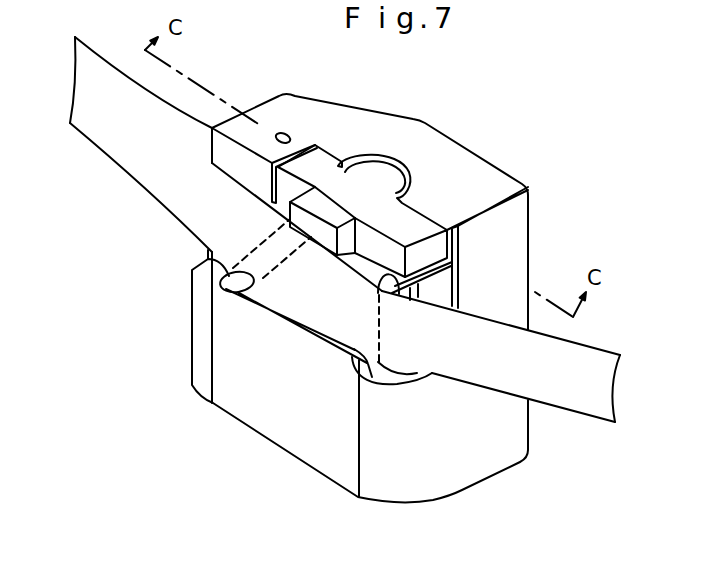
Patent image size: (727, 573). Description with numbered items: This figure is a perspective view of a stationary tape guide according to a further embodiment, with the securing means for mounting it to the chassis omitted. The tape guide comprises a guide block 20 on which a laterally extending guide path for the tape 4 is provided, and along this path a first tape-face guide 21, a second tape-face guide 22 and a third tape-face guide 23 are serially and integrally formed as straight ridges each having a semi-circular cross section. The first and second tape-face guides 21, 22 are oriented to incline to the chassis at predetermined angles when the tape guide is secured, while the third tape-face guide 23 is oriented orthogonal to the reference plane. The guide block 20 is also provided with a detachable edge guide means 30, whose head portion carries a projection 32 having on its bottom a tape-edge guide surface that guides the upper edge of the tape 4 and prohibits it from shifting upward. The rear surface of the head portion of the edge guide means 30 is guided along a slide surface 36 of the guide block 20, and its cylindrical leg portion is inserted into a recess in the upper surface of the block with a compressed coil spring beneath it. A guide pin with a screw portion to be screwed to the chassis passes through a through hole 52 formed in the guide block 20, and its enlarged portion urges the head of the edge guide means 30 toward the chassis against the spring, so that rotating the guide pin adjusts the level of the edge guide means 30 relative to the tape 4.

The tape 4 is at (576, 356).
The guide block 20 is at (545, 182).
The first tape-face guide 21 is at (197, 270).
The second tape-face guide 22 is at (357, 361).
The third tape-face guide 23 is at (383, 380).
The edge guide means 30 is at (320, 164).
The projection 32 is at (326, 208).
The slide surface 36 is at (456, 238).
The through hole 52 is at (283, 123).